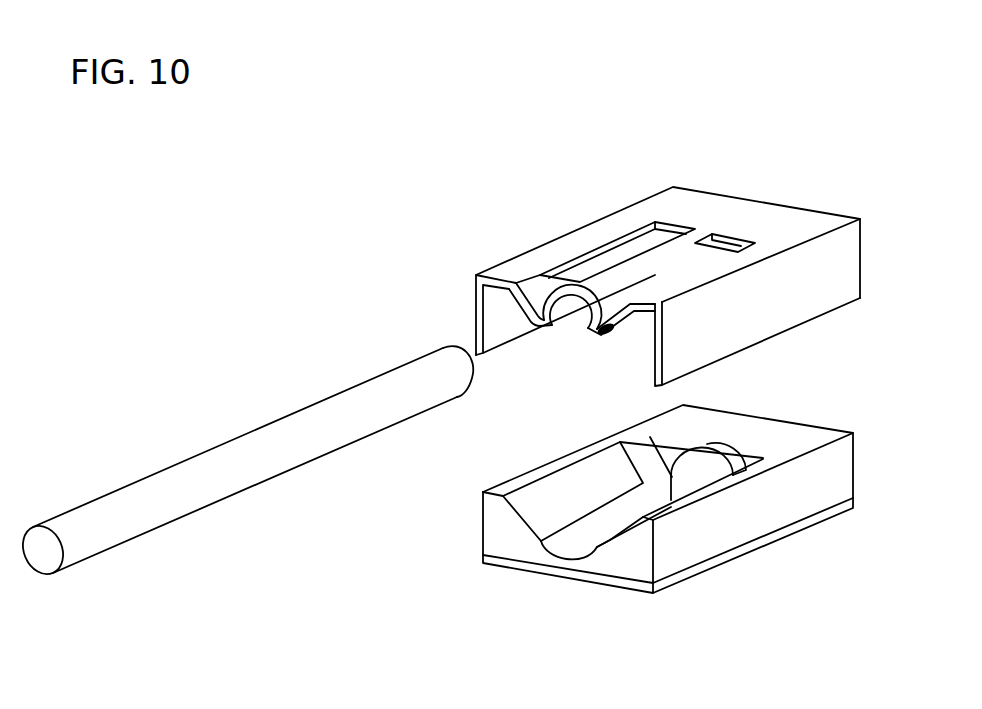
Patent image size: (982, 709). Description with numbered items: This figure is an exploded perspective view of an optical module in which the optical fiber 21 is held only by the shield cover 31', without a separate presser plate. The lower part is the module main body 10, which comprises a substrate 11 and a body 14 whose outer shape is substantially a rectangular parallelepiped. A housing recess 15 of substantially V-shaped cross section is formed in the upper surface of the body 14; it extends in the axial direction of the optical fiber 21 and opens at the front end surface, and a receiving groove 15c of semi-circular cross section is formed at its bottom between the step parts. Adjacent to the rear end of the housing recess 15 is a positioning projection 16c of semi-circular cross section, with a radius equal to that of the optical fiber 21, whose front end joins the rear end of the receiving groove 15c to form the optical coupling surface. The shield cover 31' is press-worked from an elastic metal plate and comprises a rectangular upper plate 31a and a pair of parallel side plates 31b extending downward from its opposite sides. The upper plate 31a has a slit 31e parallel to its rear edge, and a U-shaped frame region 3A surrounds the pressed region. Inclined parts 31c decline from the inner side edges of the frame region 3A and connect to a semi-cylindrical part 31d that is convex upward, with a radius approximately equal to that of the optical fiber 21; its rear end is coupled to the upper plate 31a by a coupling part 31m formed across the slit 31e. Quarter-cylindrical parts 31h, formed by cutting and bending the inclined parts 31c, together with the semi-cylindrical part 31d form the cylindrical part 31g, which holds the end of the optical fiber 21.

The U-shaped frame region 3A is at (697, 208).
The upper plate 31a is at (803, 222).
The side plates 31b is at (817, 297).
The shield cover 31' is at (516, 276).
The inclined parts 31c is at (534, 288).
The semi-cylindrical part 31d is at (537, 303).
The quarter-cylindrical parts 31h is at (590, 330).
The cylindrical part 31g is at (622, 398).
The coupling part 31m is at (702, 233).
The slit 31e is at (728, 242).
The optical fiber 21 is at (225, 442).
The module main body 10 is at (667, 592).
The body 14 is at (797, 438).
The substrate 11 is at (773, 535).
The housing recess 15 is at (533, 507).
The receiving groove 15c is at (570, 553).
The positioning projection 16c is at (707, 455).